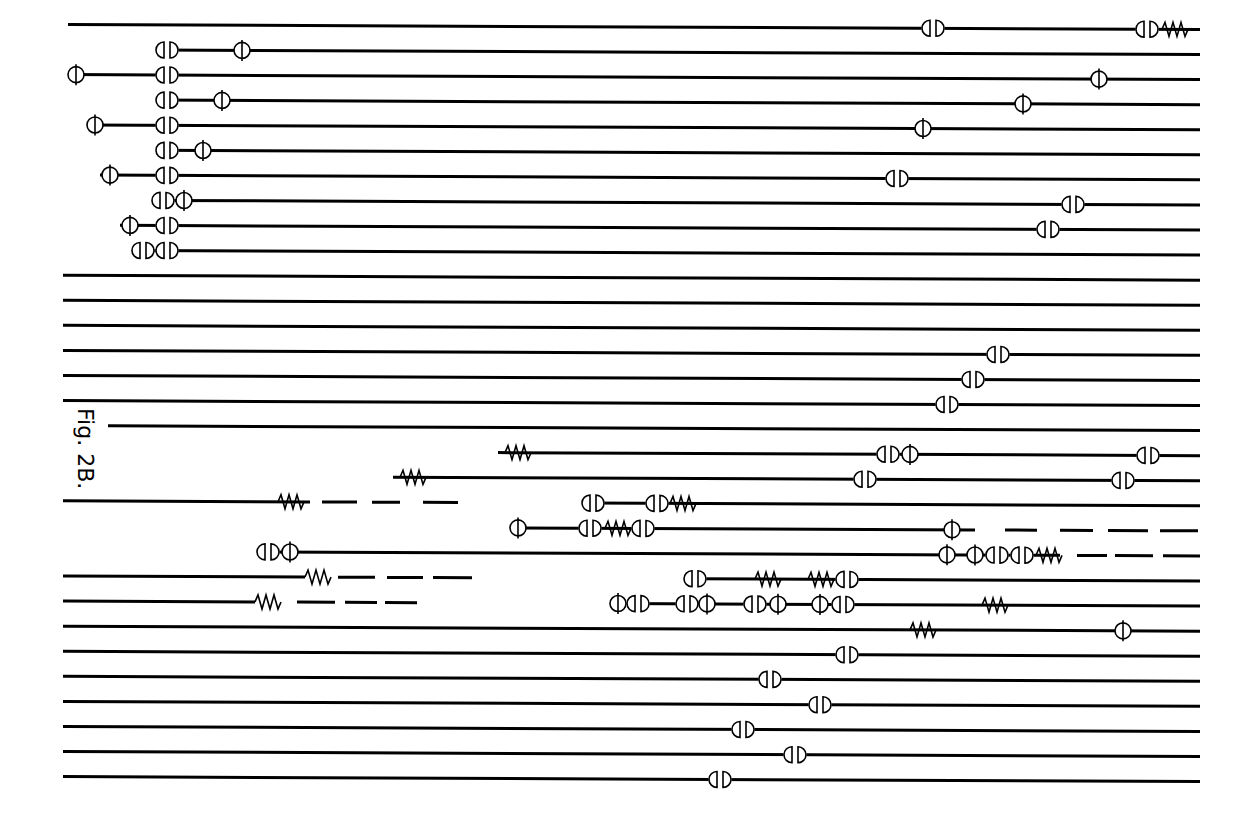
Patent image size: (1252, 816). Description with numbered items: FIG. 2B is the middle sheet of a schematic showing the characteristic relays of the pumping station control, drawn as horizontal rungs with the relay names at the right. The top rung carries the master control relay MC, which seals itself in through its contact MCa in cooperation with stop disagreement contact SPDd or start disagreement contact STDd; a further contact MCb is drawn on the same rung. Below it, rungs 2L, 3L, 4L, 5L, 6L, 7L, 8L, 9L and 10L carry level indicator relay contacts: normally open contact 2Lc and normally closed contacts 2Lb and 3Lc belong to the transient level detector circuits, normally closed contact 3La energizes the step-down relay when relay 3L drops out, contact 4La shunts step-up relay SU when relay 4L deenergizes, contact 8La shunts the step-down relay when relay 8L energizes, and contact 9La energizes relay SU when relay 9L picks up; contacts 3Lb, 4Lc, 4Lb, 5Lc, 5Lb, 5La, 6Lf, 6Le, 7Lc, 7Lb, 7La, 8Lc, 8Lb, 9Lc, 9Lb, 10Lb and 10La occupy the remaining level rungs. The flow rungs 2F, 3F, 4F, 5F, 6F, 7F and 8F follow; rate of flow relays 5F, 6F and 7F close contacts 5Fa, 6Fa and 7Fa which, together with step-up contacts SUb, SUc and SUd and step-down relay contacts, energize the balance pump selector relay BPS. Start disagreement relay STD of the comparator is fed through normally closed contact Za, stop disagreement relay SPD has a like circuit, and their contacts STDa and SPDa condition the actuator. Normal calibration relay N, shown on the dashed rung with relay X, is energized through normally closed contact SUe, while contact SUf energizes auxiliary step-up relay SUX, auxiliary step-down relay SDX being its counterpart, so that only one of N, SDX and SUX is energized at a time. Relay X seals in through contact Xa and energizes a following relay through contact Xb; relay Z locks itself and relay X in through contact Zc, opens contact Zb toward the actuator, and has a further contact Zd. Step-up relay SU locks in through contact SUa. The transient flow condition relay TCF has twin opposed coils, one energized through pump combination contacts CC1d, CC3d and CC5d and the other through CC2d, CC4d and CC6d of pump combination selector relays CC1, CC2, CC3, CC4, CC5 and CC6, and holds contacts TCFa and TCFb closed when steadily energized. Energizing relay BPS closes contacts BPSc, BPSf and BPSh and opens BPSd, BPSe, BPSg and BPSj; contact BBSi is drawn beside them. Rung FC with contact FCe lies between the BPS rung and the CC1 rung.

The master control relay MC is at (1145, 38).
The main contactor contact MCb is at (927, 20).
The contact of master control relay MCa is at (1142, 22).
The level indicator relay 2L is at (693, 51).
The normally open contact of relay 2L 2Lc is at (173, 47).
The normally closed contact of relay 2L 2Lb is at (249, 47).
The level indicator relay 3L is at (649, 76).
The normally closed contact of relay 3L 3Lc is at (80, 72).
The contact 3Lb is at (173, 72).
The normally closed contact of relay 3L 3La is at (1102, 72).
The level indicator relay 4L is at (693, 101).
The contact 4Lc is at (159, 97).
The contact 4Lb is at (226, 97).
The contact of relay 4L 4La is at (1026, 97).
The line 5L is at (658, 126).
The contact 5Lc is at (98, 122).
The contact 5Lb is at (170, 121).
The contact 5La is at (919, 123).
The line 6L is at (693, 151).
The contact 6Lf is at (160, 147).
The contact 6Le is at (208, 147).
The line 7L is at (665, 176).
The contact 7Lc is at (110, 172).
The contact 7Lb is at (170, 172).
The contact 7La is at (890, 174).
The level indicator relay 8L is at (691, 201).
The contact 8Lc is at (156, 198).
The contact 8Lb is at (189, 197).
The contact of relay 8L 8La is at (1066, 199).
The level indicator relay 9L is at (675, 226).
The contact 9Lc is at (128, 223).
The contact 9Lb is at (173, 223).
The contact of relay 9L 9La is at (1040, 224).
The line 10L is at (685, 251).
The contact 10Lb is at (136, 248).
The contact 10La is at (173, 247).
The line 2F is at (646, 276).
The line 3F is at (646, 301).
The line 4F is at (646, 326).
The rate of flow relay 5F is at (646, 351).
The contact of rate of flow relay 5F 5Fa is at (991, 349).
The rate of flow relay 6F is at (646, 376).
The contact of rate of flow relay 6F 6Fa is at (966, 374).
The rate of flow relay 7F is at (646, 401).
The contact of rate of flow relay 7F 7Fa is at (942, 399).
The line 8F is at (669, 426).
The stop disagreement relay SPD is at (497, 442).
The normally open stop disagreement contact SPDa is at (880, 450).
The stop disagreement contact SPDd is at (1143, 448).
The start disagreement relay STD is at (398, 467).
The start disagreement contact STDa is at (857, 475).
The start disagreement contact STDd is at (1117, 473).
The normal calibration relay N is at (290, 499).
The relay X is at (692, 498).
The contact of relay X Xb is at (590, 498).
The contact of relay X Xa is at (659, 496).
The relay Z is at (613, 522).
The normally closed contact of relay Z Za is at (513, 524).
The contact of relay Z Zc is at (586, 523).
The contact Zd is at (652, 533).
The contact of relay Z Zb is at (950, 522).
The step-up relay SU is at (1055, 548).
The contact of step-up relay SU SUf is at (264, 549).
The normally closed contact of relay SU SUe is at (290, 546).
The contact of relay SU SUd is at (947, 548).
The contact of relay SU SUc is at (970, 548).
The contact of relay SU SUb is at (999, 558).
The contact of relay SU SUa is at (1024, 546).
The auxiliary step-down relay SDX is at (324, 570).
The transient flow condition relay TCF is at (778, 565).
The normally open contact of relay TCF TCFb is at (688, 571).
The contact of relay TCF TCFa is at (852, 572).
The auxiliary step-up relay SUX is at (263, 598).
The balance pump selector relay BPS is at (977, 589).
The contact of relay BPS BPSj is at (612, 602).
The contact BBSi is at (659, 597).
The contact of relay BPS BPSh is at (687, 609).
The contact of relay BPS BPSg is at (705, 609).
The contact of relay BPS BPSf is at (755, 595).
The contact of relay BPS BPSe is at (776, 609).
The contact of relay BPS BPSd is at (822, 609).
The contact of relay BPS BPSc is at (848, 599).
The relay coil and line FC is at (920, 622).
The contact FCe is at (1121, 624).
The pump combination selector relay CC1 is at (651, 651).
The contact of pump combination selector relay CC1 CC1d is at (843, 647).
The pump combination selector relay CC2 is at (654, 676).
The contact of pump combination selector relay CC2 CC2d is at (765, 672).
The pump combination selector relay CC3 is at (654, 701).
The contact of pump combination selector relay CC3 CC3d is at (826, 697).
The pump combination selector relay CC4 is at (654, 726).
The contact of pump combination selector relay CC4 CC4d is at (740, 721).
The pump combination selector relay CC5 is at (654, 751).
The contact of pump combination selector relay CC5 CC5d is at (801, 747).
The pump combination selector relay CC6 is at (654, 776).
The contact of pump combination selector relay CC6 CC6d is at (713, 774).